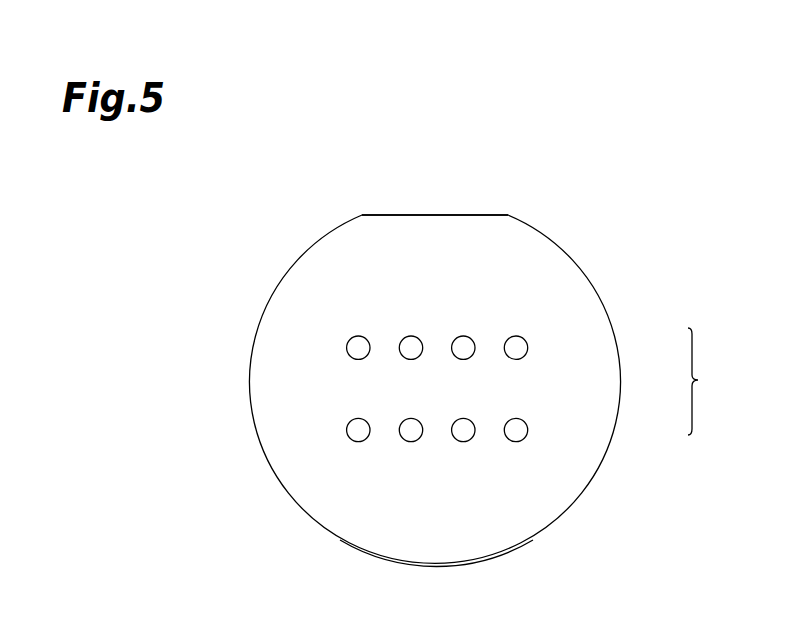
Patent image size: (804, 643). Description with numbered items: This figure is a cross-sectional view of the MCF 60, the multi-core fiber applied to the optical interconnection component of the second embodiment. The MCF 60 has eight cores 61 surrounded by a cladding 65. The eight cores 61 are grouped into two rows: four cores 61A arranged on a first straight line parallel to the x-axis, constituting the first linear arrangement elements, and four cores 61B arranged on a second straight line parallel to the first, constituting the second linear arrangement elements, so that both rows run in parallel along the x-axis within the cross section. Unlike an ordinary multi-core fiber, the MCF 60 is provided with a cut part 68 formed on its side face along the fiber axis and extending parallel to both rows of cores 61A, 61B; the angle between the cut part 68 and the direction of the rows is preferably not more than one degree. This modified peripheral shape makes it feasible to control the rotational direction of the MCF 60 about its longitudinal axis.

The MCF 60 is at (559, 243).
The cut part 68 is at (467, 215).
The cores 61 is at (710, 381).
The cores constituting first linear arrangement elements 61A is at (524, 339).
The cores constituting second linear arrangement elements 61B is at (524, 421).
The cladding 65 is at (432, 552).